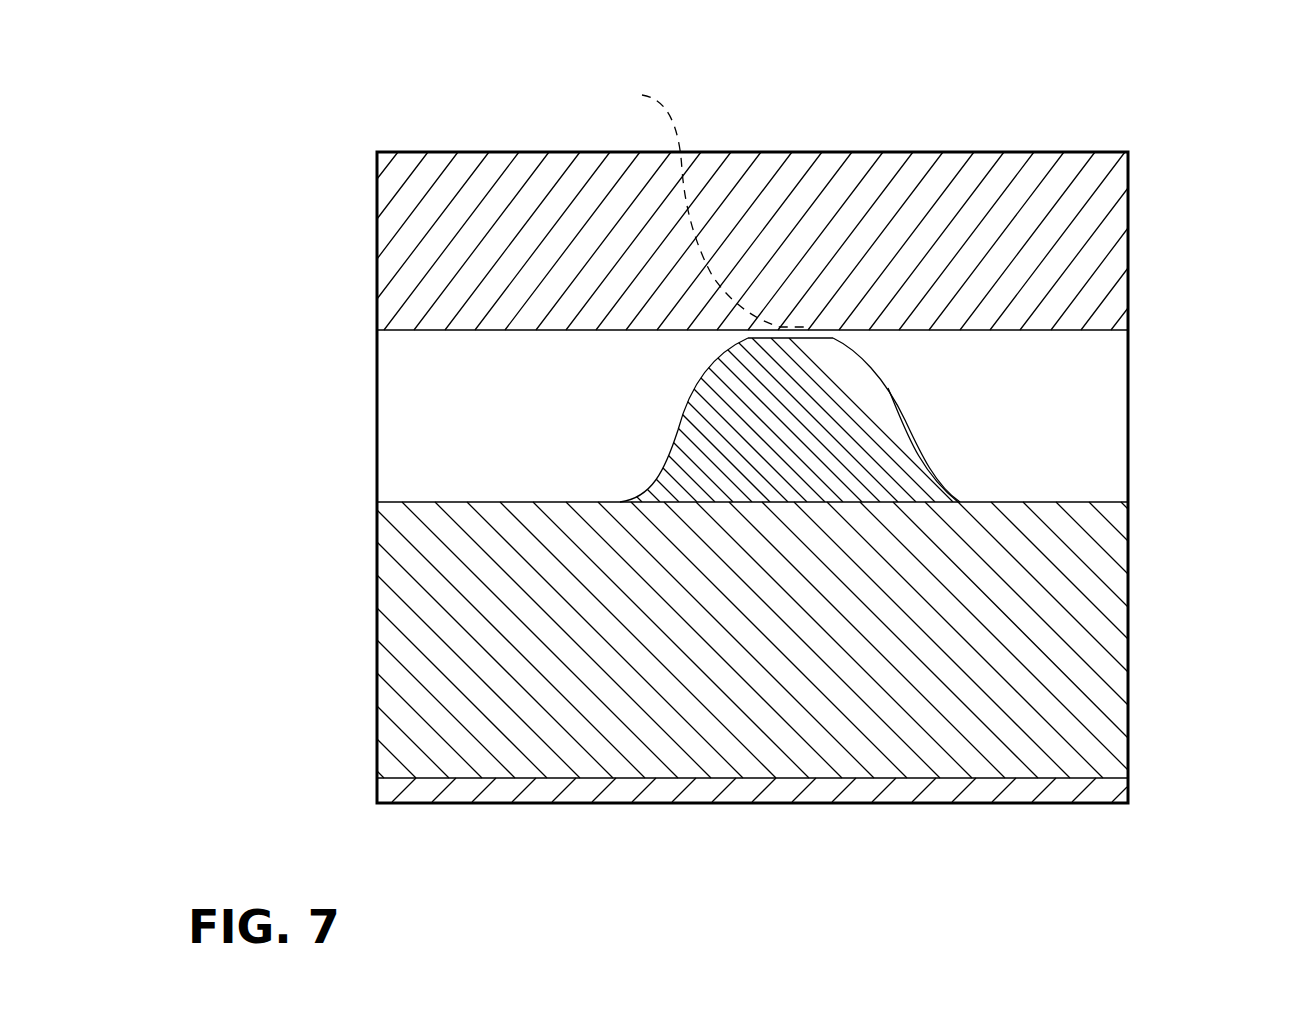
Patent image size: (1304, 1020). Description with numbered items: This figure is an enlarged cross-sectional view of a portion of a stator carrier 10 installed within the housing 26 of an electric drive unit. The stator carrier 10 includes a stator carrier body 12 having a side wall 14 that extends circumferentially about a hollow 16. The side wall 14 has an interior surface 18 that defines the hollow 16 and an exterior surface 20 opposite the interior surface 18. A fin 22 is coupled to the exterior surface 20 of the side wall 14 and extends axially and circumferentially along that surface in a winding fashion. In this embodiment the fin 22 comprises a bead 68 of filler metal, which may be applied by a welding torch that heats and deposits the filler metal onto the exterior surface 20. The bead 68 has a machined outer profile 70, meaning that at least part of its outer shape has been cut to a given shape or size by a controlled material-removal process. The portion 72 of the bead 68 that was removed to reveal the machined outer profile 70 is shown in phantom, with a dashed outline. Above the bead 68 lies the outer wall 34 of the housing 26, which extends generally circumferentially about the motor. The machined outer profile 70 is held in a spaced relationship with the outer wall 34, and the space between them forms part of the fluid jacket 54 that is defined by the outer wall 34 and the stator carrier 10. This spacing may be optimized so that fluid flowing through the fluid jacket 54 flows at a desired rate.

The stator carrier 10 is at (498, 700).
The stator carrier body 12 is at (627, 700).
The side wall 14 is at (980, 705).
The hollow 16 is at (838, 790).
The interior surface 18 is at (684, 778).
The exterior surface 20 is at (1068, 502).
The fin 22 is at (672, 447).
The housing 26 is at (737, 198).
The outer wall 34 is at (820, 250).
The fluid jacket 54 is at (545, 362).
The bead of filler metal 68 is at (864, 418).
The machined outer profile 70 is at (815, 337).
The removed portion of the bead 72 is at (709, 206).